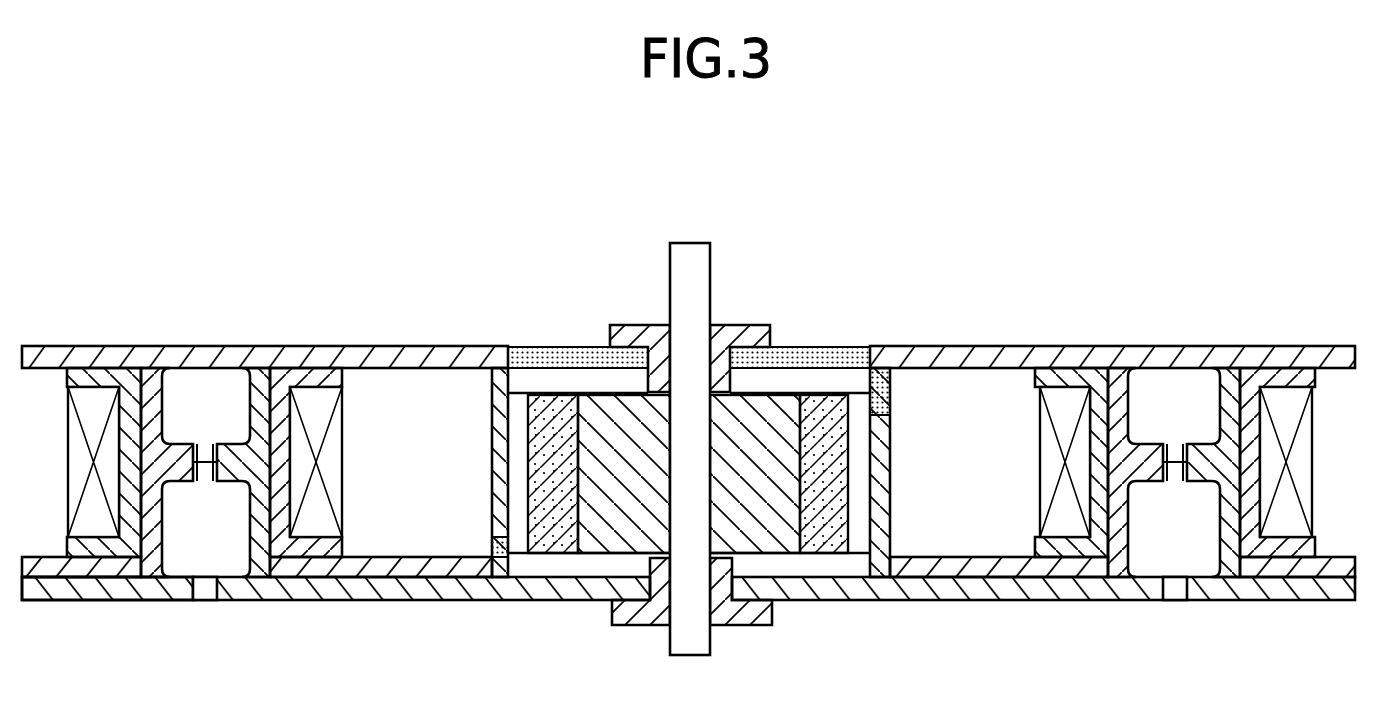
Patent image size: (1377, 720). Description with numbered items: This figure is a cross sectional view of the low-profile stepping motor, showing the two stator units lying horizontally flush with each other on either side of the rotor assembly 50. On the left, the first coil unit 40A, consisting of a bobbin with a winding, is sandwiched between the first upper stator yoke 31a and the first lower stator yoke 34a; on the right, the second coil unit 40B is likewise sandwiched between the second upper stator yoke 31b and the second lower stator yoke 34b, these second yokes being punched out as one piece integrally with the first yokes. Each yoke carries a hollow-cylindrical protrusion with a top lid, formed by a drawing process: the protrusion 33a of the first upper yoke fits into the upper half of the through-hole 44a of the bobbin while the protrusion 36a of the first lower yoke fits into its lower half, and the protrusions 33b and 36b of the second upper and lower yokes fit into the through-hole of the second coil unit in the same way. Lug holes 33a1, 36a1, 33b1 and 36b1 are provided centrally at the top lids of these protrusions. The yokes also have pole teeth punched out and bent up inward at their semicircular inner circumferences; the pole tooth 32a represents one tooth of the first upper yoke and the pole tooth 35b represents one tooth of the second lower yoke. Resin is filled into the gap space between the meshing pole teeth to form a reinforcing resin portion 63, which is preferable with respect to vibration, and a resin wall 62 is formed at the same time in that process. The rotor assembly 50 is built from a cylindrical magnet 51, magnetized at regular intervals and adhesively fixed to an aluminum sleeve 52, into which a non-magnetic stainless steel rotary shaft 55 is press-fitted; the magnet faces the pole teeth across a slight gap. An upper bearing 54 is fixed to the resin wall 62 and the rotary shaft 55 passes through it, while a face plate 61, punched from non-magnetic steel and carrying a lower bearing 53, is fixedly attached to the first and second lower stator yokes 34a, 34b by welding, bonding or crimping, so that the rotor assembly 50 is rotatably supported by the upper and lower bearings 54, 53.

The first upper stator yoke 31a is at (458, 347).
The second upper stator yoke 31b is at (1025, 347).
The pole tooth 32a is at (497, 465).
The protrusion 33a is at (258, 474).
The lug hole 33a1 is at (203, 478).
The protrusion 33b is at (1231, 467).
The lug hole 33b1 is at (1178, 470).
The first lower stator yoke 34a is at (362, 567).
The second lower stator yoke 34b is at (1037, 577).
The pole tooth 35b is at (882, 472).
The protrusion 36a is at (218, 537).
The lug hole 36a1 is at (100, 602).
The protrusion 36b is at (1172, 543).
The lug hole 36b1 is at (1220, 577).
The first coil unit 40A is at (251, 479).
The second coil unit 40B is at (1014, 424).
The through-hole 44a is at (163, 372).
The rotor assembly 50 is at (696, 435).
The cylindrical magnet 51 is at (822, 550).
The sleeve 52 is at (778, 405).
The lower bearing 53 is at (735, 615).
The upper bearing 54 is at (752, 338).
The rotary shaft 55 is at (670, 258).
The face plate 61 is at (167, 603).
The resin wall 62 is at (553, 355).
The resin portion 63 is at (478, 580).